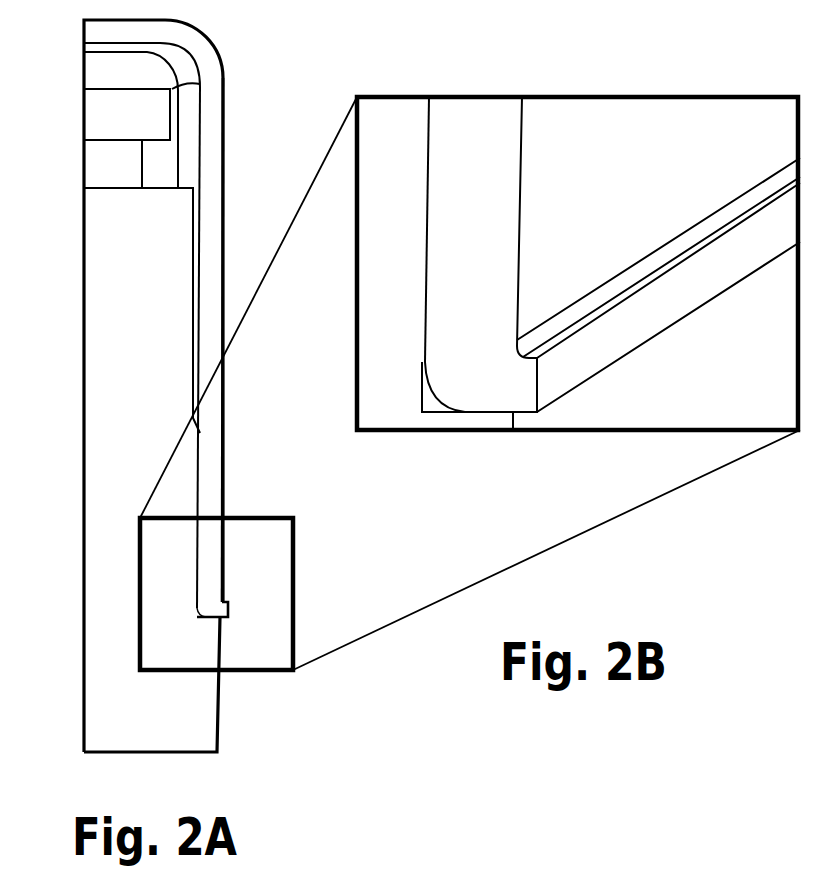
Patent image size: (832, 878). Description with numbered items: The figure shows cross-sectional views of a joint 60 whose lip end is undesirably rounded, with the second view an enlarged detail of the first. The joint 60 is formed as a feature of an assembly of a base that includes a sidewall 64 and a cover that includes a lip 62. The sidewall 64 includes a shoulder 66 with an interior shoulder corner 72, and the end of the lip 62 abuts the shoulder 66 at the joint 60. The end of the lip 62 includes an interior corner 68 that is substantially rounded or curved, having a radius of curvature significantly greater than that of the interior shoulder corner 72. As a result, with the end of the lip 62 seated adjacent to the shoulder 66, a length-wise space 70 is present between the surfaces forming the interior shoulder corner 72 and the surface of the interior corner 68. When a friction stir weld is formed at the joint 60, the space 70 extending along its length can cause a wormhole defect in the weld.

In FIG. 2A, the joint 60 is at (240, 640).
In FIG. 2B, the joint 60 is at (473, 445).
In FIG. 2A, the lip 62 is at (213, 570).
In FIG. 2B, the lip 62 is at (483, 301).
In FIG. 2A, the sidewall 64 is at (108, 598).
In FIG. 2B, the sidewall 64 is at (393, 322).
In FIG. 2A, the shoulder 66 is at (227, 682).
In FIG. 2B, the shoulder 66 is at (423, 457).
In FIG. 2B, the interior corner 68 is at (448, 392).
In FIG. 2B, the space 70 is at (427, 395).
In FIG. 2A, the interior shoulder corner 72 is at (188, 627).
In FIG. 2B, the interior shoulder corner 72 is at (412, 422).